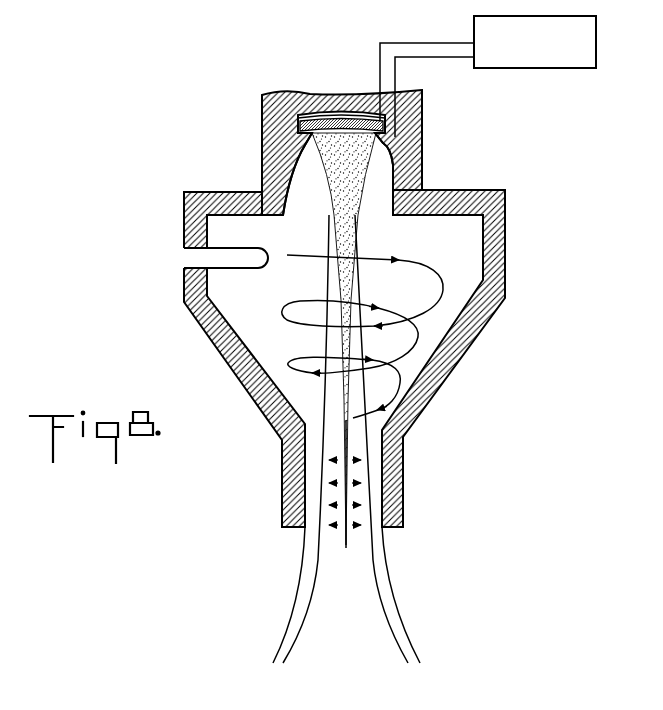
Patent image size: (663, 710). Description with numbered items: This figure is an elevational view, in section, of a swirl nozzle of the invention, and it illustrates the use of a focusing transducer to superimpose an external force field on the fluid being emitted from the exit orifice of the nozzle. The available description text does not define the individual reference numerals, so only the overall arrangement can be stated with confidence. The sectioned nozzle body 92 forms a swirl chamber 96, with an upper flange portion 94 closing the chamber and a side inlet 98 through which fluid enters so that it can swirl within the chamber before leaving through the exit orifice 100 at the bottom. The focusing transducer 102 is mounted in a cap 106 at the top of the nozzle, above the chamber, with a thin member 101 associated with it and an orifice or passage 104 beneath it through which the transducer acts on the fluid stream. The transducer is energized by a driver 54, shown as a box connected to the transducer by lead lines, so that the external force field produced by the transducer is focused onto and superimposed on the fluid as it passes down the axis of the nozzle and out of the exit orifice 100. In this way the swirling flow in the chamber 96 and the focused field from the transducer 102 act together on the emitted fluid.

The driver 54 is at (543, 68).
The housing 92 is at (390, 352).
The housing flange 94 is at (507, 213).
The vortex chamber 96 is at (447, 265).
The inlet 98 is at (186, 258).
The outlet 100 is at (313, 525).
The membrane 101 is at (322, 117).
The piezoelectric transducer 102 is at (346, 116).
The nozzle orifice 104 is at (308, 138).
The nozzle cap 106 is at (298, 93).